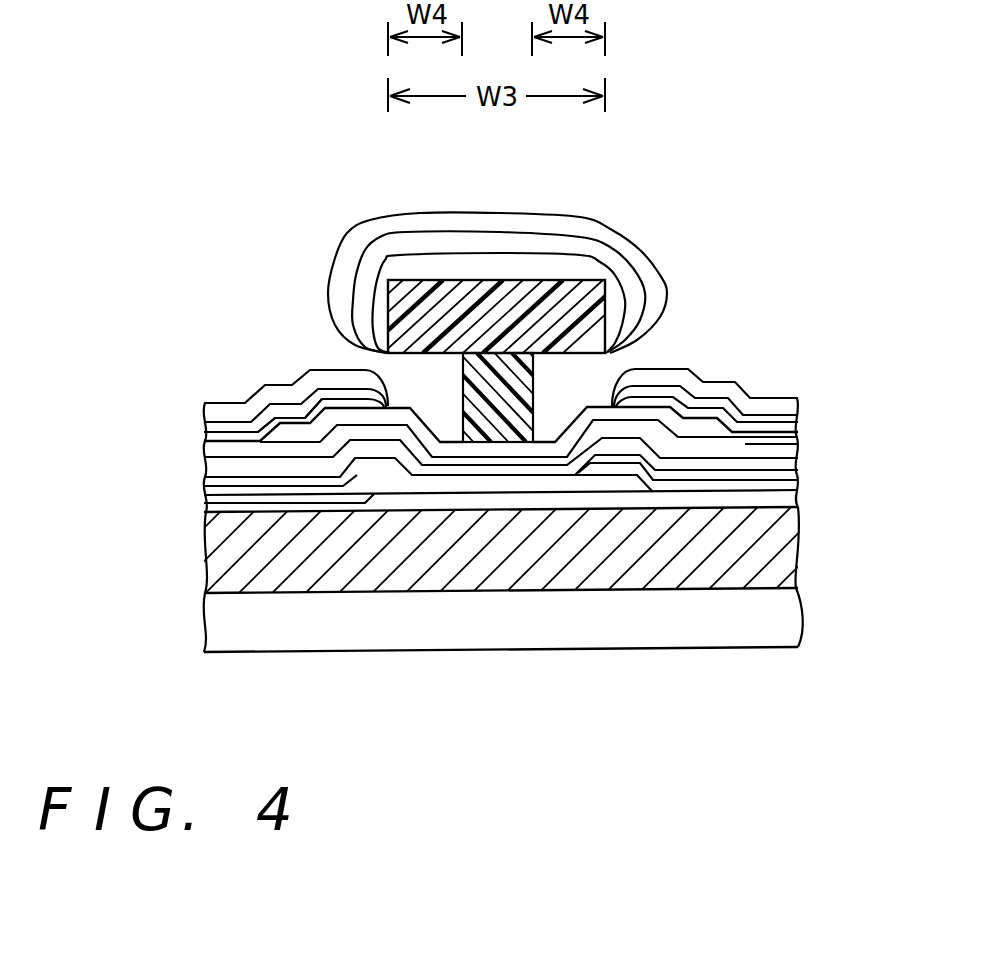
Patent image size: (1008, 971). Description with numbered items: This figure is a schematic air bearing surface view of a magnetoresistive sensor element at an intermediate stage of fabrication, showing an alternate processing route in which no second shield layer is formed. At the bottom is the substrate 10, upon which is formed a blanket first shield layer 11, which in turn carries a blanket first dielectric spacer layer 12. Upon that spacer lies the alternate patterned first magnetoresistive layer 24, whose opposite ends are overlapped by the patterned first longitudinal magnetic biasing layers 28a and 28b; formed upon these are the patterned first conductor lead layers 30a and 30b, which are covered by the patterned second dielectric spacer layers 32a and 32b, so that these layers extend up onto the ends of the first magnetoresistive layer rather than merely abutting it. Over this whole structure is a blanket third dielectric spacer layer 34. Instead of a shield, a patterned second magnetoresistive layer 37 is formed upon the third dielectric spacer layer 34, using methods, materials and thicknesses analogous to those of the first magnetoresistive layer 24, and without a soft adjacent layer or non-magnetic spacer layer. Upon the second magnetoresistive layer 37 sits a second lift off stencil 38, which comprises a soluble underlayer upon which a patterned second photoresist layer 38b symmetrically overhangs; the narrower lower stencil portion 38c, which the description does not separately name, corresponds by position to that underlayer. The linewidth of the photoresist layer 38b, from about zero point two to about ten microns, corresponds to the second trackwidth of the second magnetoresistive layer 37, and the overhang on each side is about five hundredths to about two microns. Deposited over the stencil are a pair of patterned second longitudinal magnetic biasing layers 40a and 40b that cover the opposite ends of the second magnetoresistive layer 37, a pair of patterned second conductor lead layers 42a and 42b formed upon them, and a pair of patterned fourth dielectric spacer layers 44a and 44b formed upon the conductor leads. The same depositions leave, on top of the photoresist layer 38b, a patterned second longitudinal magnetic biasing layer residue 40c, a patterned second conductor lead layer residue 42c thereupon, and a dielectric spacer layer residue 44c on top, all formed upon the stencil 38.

The substrate 10 is at (224, 627).
The blanket first shield layer 11 is at (227, 563).
The blanket first dielectric spacer layer 12 is at (215, 505).
The alternate patterned first magnetoresistive (MR) layer 24 is at (427, 483).
The patterned first longitudinal magnetic biasing layer 28a is at (212, 490).
The patterned first longitudinal magnetic biasing layer 28b is at (800, 488).
The patterned first conductor lead layer 30a is at (212, 466).
The patterned first conductor lead layer 30b is at (800, 472).
The patterned second dielectric spacer layer 32a is at (210, 447).
The patterned second dielectric spacer layer 32b is at (797, 463).
The blanket third dielectric spacer layer 34 is at (797, 444).
The patterned second magnetoresistive (MR) layer 37 is at (297, 433).
The second lift off stencil 38 is at (423, 537).
The patterned second photoresist layer 38b is at (515, 352).
The contact plug portion 38c is at (475, 433).
The patterned second longitudinal magnetic biasing layer 40a is at (216, 437).
The patterned second longitudinal magnetic biasing layer 40b is at (797, 432).
The patterned second longitudinal magnetic biasing layer residue 40c is at (422, 270).
The patterned second conductor lead layer 42a is at (216, 427).
The patterned second conductor lead layer 42b is at (798, 422).
The patterned second conductor lead layer residue 42c is at (472, 247).
The patterned fourth dielectric spacer layer 44a is at (240, 412).
The patterned fourth dielectric spacer layer 44b is at (797, 398).
The patterned third dielectric spacer layer residue 44c is at (537, 226).